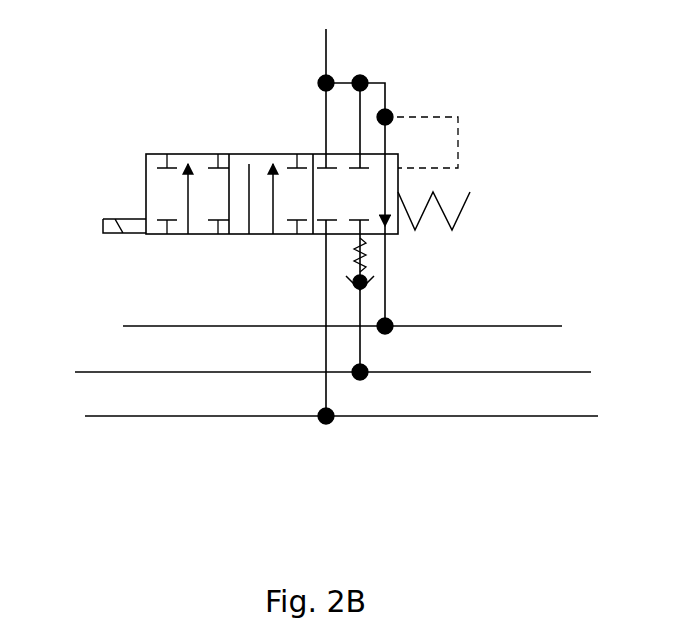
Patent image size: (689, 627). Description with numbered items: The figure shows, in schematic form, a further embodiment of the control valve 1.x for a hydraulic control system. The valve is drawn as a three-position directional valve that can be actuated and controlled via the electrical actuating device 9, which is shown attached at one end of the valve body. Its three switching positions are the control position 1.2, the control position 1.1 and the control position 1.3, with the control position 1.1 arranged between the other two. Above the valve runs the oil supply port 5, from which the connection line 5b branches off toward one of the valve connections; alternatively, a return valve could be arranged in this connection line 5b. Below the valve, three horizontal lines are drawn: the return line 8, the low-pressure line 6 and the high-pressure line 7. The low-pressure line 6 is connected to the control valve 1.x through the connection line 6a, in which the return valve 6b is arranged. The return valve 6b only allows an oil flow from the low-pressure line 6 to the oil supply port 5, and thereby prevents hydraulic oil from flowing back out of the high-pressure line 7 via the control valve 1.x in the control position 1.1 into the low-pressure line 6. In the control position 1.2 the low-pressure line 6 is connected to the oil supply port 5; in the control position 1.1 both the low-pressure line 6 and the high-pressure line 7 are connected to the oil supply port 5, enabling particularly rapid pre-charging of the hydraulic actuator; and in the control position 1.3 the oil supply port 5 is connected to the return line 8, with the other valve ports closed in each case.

The control position 1.1 is at (282, 146).
The control position 1.2 is at (180, 146).
The control position 1.3 is at (409, 241).
The control valve 1.x is at (475, 181).
The oil supply port 5 is at (328, 52).
The connection line 5b is at (362, 107).
The low-pressure line 6 is at (75, 372).
The connection line 6a is at (360, 298).
The return valve 6b is at (352, 270).
The high-pressure line 7 is at (85, 416).
The return line 8 is at (123, 326).
The electrical actuating device 9 is at (125, 218).